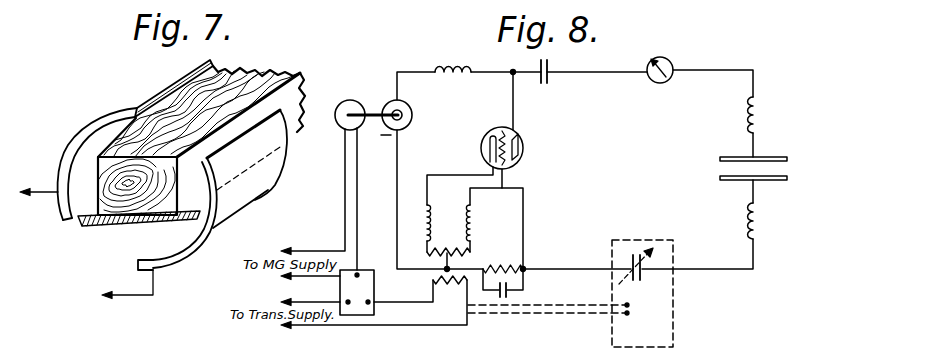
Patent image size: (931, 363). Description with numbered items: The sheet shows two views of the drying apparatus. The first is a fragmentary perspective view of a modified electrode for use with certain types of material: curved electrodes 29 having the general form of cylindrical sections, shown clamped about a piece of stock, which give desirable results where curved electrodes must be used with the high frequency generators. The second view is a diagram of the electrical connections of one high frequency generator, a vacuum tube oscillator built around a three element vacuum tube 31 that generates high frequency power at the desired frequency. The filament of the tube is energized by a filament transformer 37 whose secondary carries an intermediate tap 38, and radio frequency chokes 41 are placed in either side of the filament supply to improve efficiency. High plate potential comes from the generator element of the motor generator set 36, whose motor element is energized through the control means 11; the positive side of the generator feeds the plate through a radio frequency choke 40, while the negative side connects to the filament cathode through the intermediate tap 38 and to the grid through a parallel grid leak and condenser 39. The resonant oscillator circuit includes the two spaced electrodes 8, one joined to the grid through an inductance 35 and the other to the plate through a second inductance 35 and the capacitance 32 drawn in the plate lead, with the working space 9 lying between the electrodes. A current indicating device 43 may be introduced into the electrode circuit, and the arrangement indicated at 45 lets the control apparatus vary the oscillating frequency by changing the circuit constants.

In FIG. 8, the spaced electrodes 8 is at (726, 156).
In FIG. 8, the work space between electrodes 9 is at (608, 163).
In FIG. 8, the control means 11 is at (371, 286).
In FIG. 7, the curved electrodes 29 is at (125, 104).
In FIG. 8, the three element vacuum tube 31 is at (494, 128).
In FIG. 8, the blocking condenser 32 is at (549, 65).
In FIG. 8, the inductances 35 is at (745, 112).
In FIG. 8, the motor generator set 36 is at (372, 124).
In FIG. 8, the filament transformer 37 is at (436, 257).
In FIG. 8, the intermediate tap 38 is at (450, 257).
In FIG. 8, the parallel grid leak and condenser 39 is at (520, 281).
In FIG. 8, the radio frequency choke 40 is at (456, 80).
In FIG. 8, the radio frequency chokes 41 is at (466, 216).
In FIG. 8, the current indicating device 43 is at (660, 84).
In FIG. 8, the frequency varying control arrangement 45 is at (657, 292).